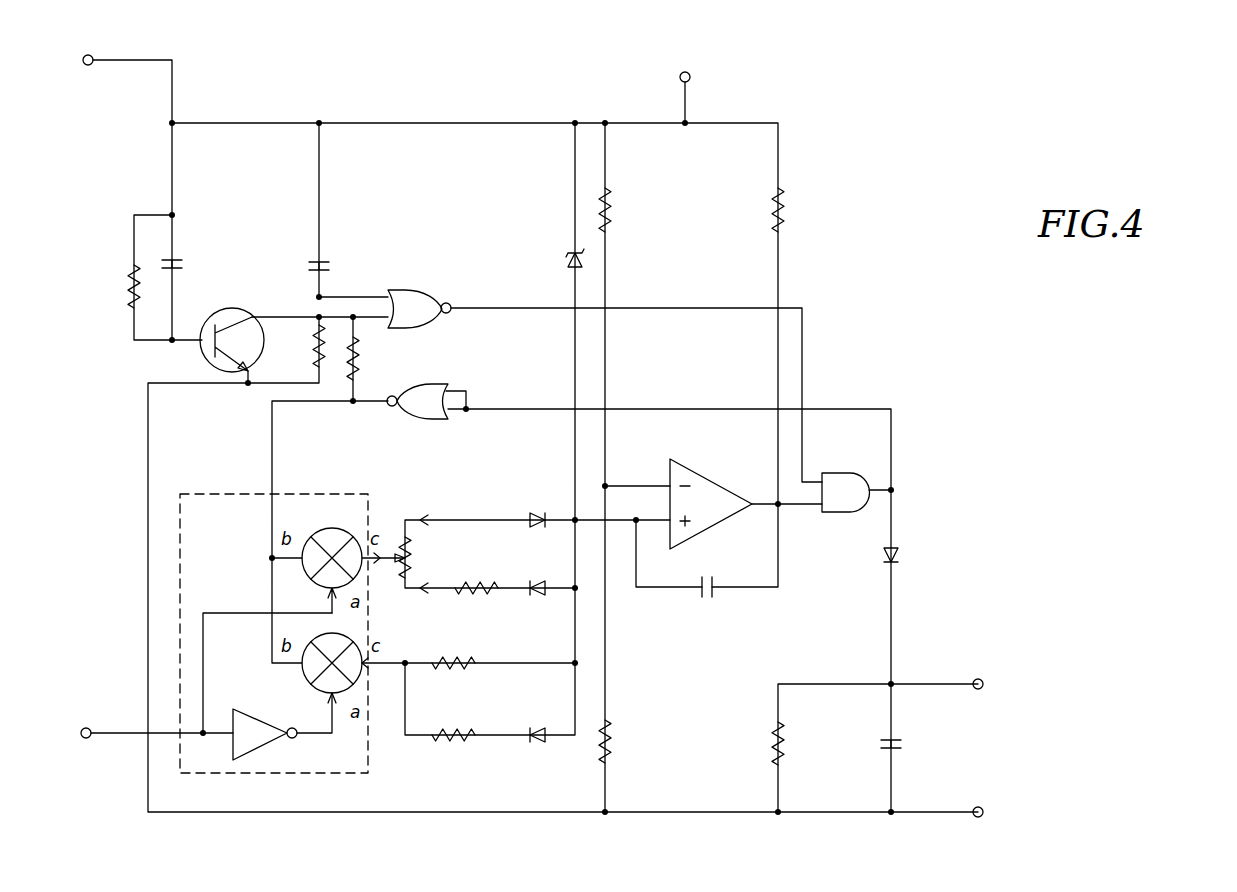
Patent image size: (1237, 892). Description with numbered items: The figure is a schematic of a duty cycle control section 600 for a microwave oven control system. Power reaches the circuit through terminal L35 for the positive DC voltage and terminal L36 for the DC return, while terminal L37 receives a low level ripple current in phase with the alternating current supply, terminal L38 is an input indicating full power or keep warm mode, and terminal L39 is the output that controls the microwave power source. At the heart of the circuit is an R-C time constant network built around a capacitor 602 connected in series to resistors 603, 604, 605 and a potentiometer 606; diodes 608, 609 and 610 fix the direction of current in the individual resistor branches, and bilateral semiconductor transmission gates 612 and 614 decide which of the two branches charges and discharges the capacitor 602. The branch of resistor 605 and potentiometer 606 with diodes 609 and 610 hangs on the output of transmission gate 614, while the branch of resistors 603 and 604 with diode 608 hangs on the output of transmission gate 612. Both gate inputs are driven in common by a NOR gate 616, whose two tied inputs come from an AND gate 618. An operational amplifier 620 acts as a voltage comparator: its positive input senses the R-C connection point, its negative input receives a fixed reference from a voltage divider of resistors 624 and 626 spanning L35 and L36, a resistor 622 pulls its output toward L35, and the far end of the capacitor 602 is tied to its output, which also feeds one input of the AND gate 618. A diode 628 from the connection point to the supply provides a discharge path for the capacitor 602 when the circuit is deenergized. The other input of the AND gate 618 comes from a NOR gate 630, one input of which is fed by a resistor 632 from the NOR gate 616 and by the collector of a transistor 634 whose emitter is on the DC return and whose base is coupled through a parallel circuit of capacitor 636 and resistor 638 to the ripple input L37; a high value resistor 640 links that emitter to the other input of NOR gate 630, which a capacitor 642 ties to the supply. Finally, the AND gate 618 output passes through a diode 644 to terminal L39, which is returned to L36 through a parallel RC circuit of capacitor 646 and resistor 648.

The duty cycle control section 600 is at (510, 484).
The capacitor 602 is at (732, 596).
The resistor 603 is at (455, 729).
The resistor 604 is at (470, 656).
The resistor 605 is at (482, 573).
The potentiometer 606 is at (431, 554).
The diode 608 is at (535, 742).
The diode 609 is at (546, 569).
The diode 610 is at (552, 498).
The bilateral semiconductor transmission gate 612 is at (312, 692).
The bilateral semiconductor transmission gate 614 is at (338, 528).
The NOR gate 616 is at (414, 420).
The AND gate 618 is at (862, 473).
The operational amplifier 620 is at (736, 474).
The resistor 622 is at (785, 212).
The resistor 624 is at (612, 220).
The resistor 626 is at (615, 735).
The diode 628 is at (570, 262).
The NOR gate 630 is at (437, 282).
The resistor 632 is at (360, 354).
The transistor 634 is at (260, 300).
The capacitor 636 is at (178, 258).
The resistor 638 is at (130, 284).
The high value resistor 640 is at (314, 350).
The capacitor 642 is at (325, 258).
The diode 644 is at (882, 551).
The capacitor 646 is at (900, 741).
The resistor 648 is at (772, 744).
The terminal L35 is at (680, 78).
The terminal L36 is at (975, 807).
The terminal L37 is at (91, 65).
The terminal L38 is at (90, 727).
The terminal L39 is at (975, 680).